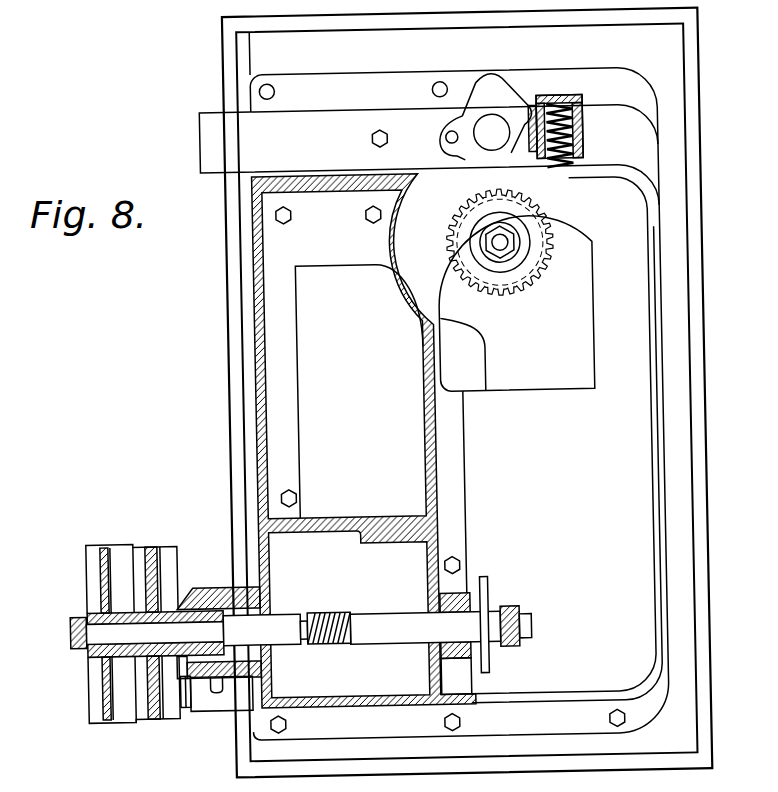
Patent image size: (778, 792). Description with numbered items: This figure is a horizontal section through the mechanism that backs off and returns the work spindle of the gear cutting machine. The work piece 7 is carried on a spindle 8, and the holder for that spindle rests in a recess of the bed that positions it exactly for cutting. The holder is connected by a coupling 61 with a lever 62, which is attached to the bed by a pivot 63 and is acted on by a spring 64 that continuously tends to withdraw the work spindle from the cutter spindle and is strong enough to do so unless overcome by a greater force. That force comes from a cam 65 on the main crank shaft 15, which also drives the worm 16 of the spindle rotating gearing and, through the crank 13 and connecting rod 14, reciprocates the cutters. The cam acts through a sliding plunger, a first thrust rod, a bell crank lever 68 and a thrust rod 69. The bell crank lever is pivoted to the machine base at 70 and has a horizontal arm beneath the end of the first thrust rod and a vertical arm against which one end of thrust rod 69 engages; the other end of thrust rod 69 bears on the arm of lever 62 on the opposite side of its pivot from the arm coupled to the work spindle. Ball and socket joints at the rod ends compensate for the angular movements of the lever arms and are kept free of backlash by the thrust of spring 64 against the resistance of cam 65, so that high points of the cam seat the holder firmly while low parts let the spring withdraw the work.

The work piece 7 is at (524, 207).
The spindle 8 is at (508, 248).
The crank 13 is at (529, 625).
The connecting rod 14 is at (508, 608).
The crank shaft 15 is at (288, 609).
The worm 16 is at (331, 609).
The coupling 61 is at (514, 104).
The lever 62 is at (427, 119).
The pivot 63 is at (385, 128).
The spring 64 is at (586, 102).
The cam 65 is at (213, 605).
The bell crank lever 68 is at (204, 707).
The thrust rod 69 is at (228, 342).
The pivot 70 is at (184, 707).